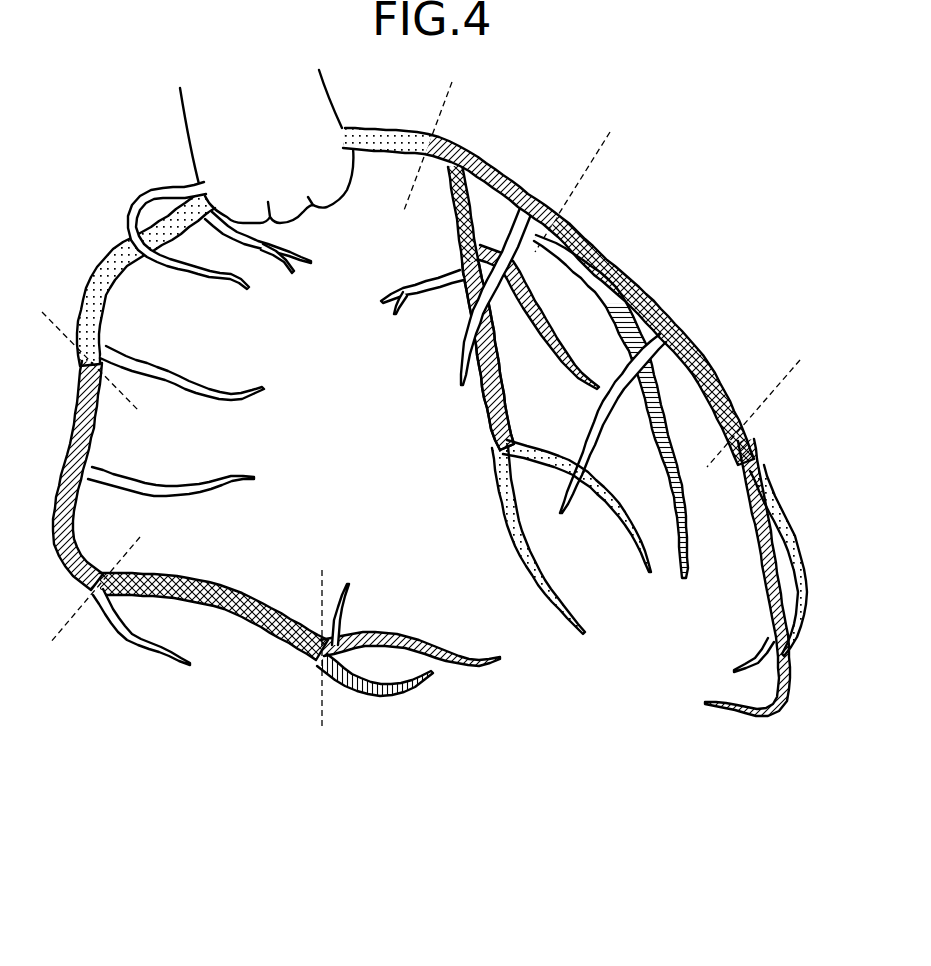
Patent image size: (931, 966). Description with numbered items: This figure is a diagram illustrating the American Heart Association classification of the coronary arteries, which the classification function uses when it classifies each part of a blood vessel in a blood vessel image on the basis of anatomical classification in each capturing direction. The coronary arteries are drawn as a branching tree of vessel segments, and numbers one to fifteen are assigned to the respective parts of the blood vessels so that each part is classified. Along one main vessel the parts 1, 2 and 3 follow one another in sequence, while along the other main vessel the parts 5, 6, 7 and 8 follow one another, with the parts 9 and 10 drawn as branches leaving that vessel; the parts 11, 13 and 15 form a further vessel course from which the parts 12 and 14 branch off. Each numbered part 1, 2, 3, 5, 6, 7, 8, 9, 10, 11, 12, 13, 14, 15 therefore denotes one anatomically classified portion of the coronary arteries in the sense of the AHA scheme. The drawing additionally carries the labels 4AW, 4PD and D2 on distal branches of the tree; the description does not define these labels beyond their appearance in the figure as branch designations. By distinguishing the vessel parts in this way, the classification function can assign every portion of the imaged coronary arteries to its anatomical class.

The coronary artery part 1 is at (140, 278).
The coronary artery part 2 is at (73, 475).
The coronary artery part 3 is at (214, 616).
The right posterolateral (acute marginal) branch 4AW is at (410, 625).
The posterior descending artery 4PD is at (375, 691).
The coronary artery part 5 is at (548, 280).
The coronary artery part 6 is at (548, 296).
The coronary artery part 7 is at (548, 296).
The coronary artery part 8 is at (747, 577).
The coronary artery part 9 is at (611, 406).
The coronary artery part 10 is at (789, 560).
The coronary artery part 11 is at (467, 307).
The coronary artery part 12 is at (537, 317).
The coronary artery part 13 is at (481, 307).
The coronary artery part 14 is at (577, 506).
The coronary artery part 15 is at (533, 540).
The second diagonal branch D2 is at (783, 654).